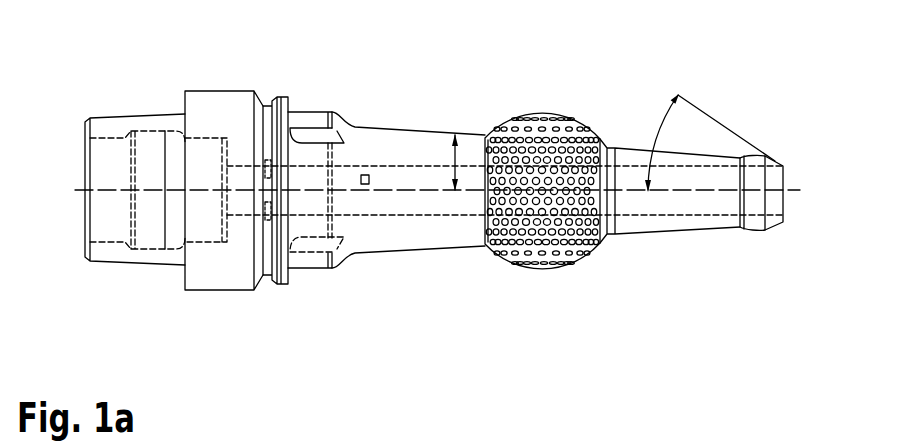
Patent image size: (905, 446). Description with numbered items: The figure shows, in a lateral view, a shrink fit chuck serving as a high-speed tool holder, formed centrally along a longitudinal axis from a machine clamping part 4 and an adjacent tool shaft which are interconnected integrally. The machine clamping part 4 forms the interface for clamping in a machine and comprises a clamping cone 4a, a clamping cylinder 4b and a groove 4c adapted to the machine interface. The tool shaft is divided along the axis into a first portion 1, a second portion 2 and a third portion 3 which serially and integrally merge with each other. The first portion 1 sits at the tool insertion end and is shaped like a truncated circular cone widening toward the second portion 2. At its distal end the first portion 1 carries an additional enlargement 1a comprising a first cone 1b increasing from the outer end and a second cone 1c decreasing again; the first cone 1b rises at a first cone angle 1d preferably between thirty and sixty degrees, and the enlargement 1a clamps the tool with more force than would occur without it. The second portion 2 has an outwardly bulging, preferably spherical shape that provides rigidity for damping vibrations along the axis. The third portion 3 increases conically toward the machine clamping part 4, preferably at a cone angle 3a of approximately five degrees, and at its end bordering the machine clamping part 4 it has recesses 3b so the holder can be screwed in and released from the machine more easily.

The first portion of the tool shaft 1 is at (705, 201).
The additional enlargement 1a is at (771, 207).
The first cone 1b is at (777, 160).
The second cone 1c is at (748, 155).
The first cone angle 1d is at (710, 122).
The second portion of the tool shaft 2 is at (562, 291).
The third portion of the tool shaft 3 is at (386, 214).
The cone angle 3a is at (452, 160).
The recess 3b is at (322, 133).
The machine clamping part 4 is at (186, 201).
The clamping cone 4a is at (119, 117).
The clamping cylinder 4b is at (225, 90).
The groove 4c is at (263, 108).